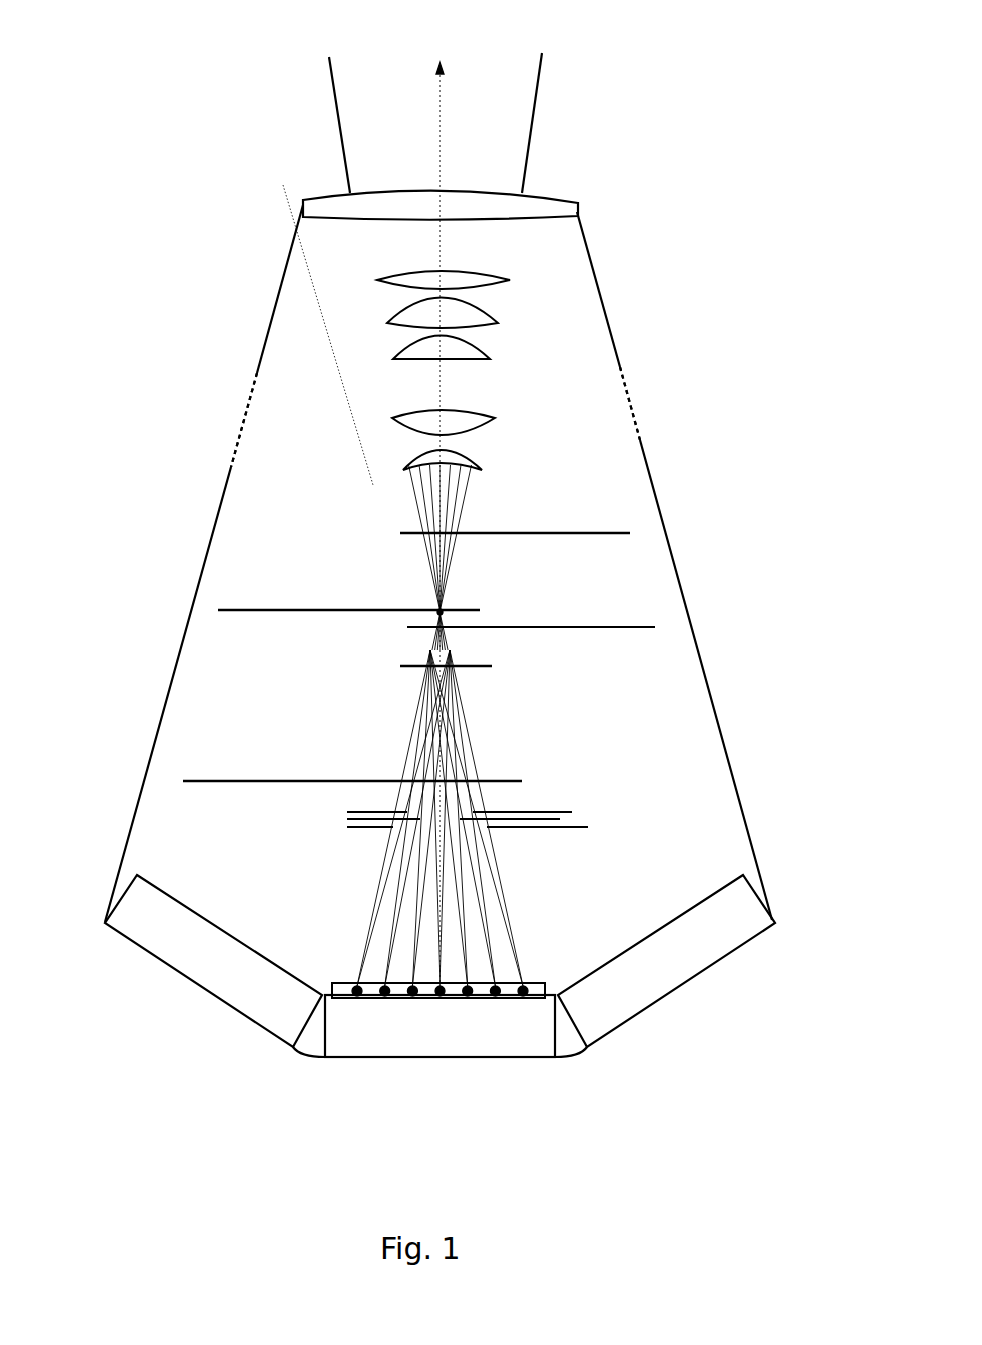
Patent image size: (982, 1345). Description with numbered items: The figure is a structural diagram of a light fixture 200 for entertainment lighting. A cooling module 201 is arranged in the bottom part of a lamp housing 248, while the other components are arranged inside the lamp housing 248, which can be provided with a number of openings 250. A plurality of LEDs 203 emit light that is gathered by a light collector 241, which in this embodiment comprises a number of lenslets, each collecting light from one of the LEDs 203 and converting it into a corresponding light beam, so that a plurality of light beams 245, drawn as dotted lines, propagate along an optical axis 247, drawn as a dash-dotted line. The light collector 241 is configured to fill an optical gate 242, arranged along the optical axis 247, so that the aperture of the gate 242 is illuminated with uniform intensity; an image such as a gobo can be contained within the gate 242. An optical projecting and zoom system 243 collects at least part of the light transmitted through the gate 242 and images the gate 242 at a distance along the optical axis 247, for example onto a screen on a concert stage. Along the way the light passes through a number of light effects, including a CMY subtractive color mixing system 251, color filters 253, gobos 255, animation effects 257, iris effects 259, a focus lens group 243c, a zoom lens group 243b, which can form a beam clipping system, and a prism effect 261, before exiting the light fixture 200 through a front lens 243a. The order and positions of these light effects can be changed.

The light fixture 200 is at (619, 160).
The cooling module 201 is at (216, 1026).
The LEDs 203 is at (493, 998).
The light collector 241 is at (512, 998).
The optical gate 242 is at (474, 617).
The optical projecting and zoom system 243 is at (329, 335).
The front lens 243a is at (363, 203).
The zoom lens group 243b is at (387, 322).
The focus lens group 243c is at (395, 428).
The light beams 245 is at (463, 718).
The optical axis 247 is at (442, 100).
The lamp housing 248 is at (607, 307).
The openings 250 is at (236, 447).
The CMY subtractive color mixing system 251 is at (437, 822).
The color filters 253 is at (352, 760).
The gobos 255 is at (349, 590).
The animation effects 257 is at (531, 648).
The iris effects 259 is at (416, 677).
The prism effect 261 is at (515, 553).